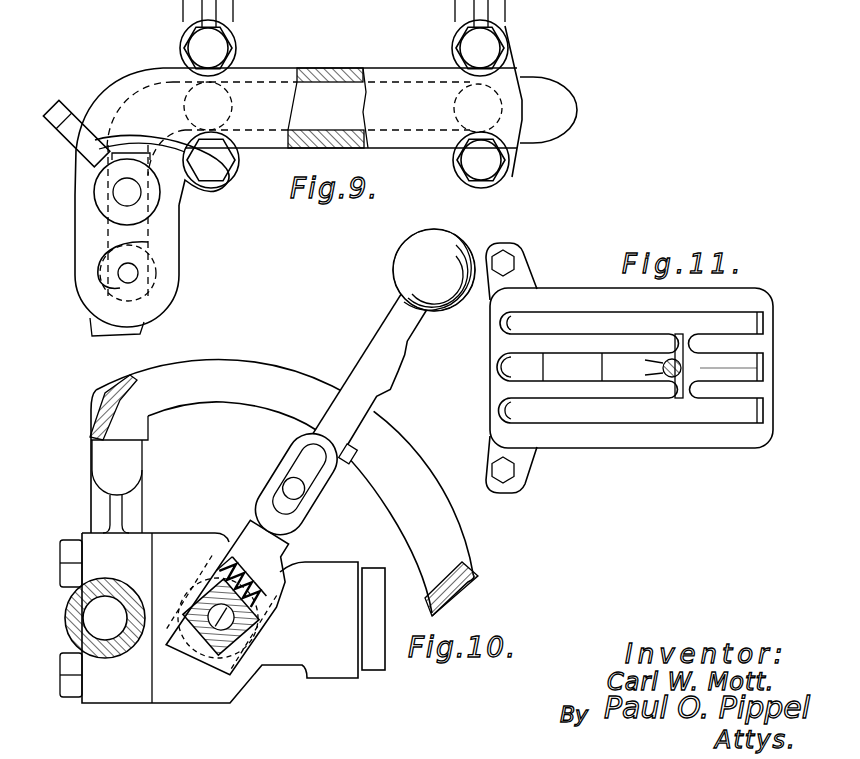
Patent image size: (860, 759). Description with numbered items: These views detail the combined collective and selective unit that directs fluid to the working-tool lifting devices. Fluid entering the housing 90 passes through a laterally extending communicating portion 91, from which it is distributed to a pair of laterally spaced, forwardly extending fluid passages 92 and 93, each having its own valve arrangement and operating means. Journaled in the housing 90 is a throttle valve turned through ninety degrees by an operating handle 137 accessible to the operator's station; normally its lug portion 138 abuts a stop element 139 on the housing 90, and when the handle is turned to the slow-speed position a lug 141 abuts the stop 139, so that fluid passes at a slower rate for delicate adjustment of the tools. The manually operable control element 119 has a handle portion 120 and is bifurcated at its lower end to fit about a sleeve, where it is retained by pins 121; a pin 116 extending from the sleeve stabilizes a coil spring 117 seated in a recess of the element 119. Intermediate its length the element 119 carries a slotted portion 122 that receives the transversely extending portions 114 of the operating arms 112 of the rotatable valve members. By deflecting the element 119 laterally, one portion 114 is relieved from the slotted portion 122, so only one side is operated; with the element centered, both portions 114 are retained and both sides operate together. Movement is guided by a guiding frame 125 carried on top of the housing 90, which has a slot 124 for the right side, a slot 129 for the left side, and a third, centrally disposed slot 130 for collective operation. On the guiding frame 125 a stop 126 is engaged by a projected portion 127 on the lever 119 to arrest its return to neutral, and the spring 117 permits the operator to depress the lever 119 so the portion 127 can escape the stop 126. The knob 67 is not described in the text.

In FIG. 9, the housing 90 is at (126, 82).
In FIG. 9, the laterally extending communicating portion 91 is at (287, 70).
In FIG. 9, the fluid passage 92 is at (168, 76).
In FIG. 9, the fluid passage 93 is at (500, 97).
In FIG. 9, the operating handle 137 is at (68, 104).
In FIG. 9, the lug portion 138 is at (180, 228).
In FIG. 9, the stop element 139 is at (140, 273).
In FIG. 9, the lug 141 is at (210, 165).
In FIG. 10, the knob 67 is at (390, 251).
In FIG. 10, the operating arm 112 is at (262, 527).
In FIG. 10, the transversely extending portion 114 is at (290, 490).
In FIG. 10, the pin 116 is at (240, 625).
In FIG. 10, the coil spring 117 is at (250, 592).
In FIG. 10, the manually operable control element 119 is at (393, 328).
In FIG. 10, the handle portion 120 is at (405, 265).
In FIG. 10, the pin 121 is at (208, 655).
In FIG. 10, the slotted portion 122 is at (296, 462).
In FIG. 10, the guiding frame 125 is at (254, 360).
In FIG. 11, the guiding frame 125 is at (698, 455).
In FIG. 10, the stop 126 is at (355, 472).
In FIG. 10, the projected portion 127 is at (352, 455).
In FIG. 11, the projected portion 127 is at (676, 336).
In FIG. 11, the slot 124 is at (620, 428).
In FIG. 11, the slot 129 is at (721, 319).
In FIG. 11, the third and centrally disposed slot 130 is at (740, 374).